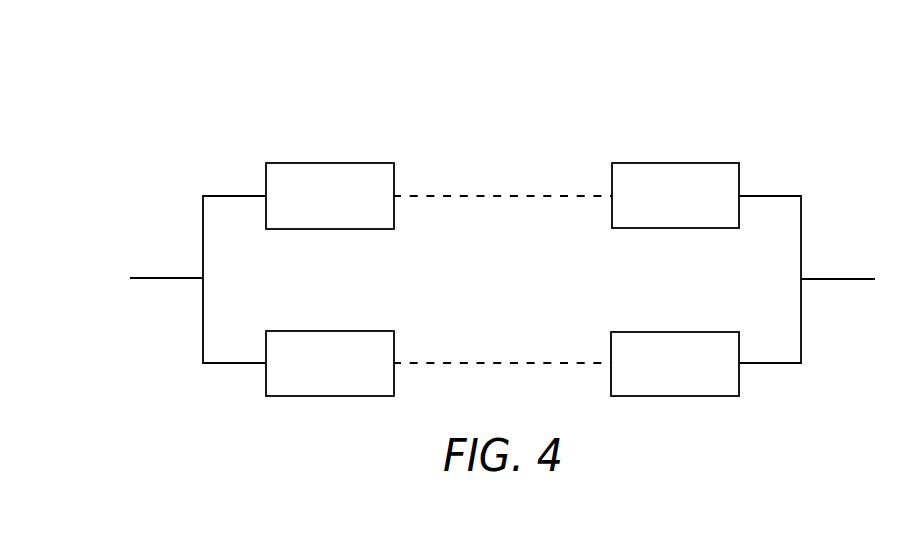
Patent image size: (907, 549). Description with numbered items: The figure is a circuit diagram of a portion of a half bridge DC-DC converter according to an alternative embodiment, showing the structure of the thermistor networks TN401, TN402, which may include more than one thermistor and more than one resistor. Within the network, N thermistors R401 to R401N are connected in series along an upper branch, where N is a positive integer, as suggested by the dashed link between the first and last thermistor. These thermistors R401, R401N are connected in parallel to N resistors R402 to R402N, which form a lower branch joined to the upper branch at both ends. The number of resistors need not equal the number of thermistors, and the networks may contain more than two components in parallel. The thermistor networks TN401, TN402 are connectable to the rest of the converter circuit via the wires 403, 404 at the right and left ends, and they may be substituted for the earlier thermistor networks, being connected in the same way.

The thermistor network TN401 is at (243, 97).
The thermistor network TN402 is at (503, 247).
The thermistor R401 is at (357, 162).
The thermistor R401N is at (693, 162).
The resistor R402 is at (359, 398).
The resistor R402N is at (692, 398).
The wire 403 is at (862, 278).
The wire 404 is at (143, 276).